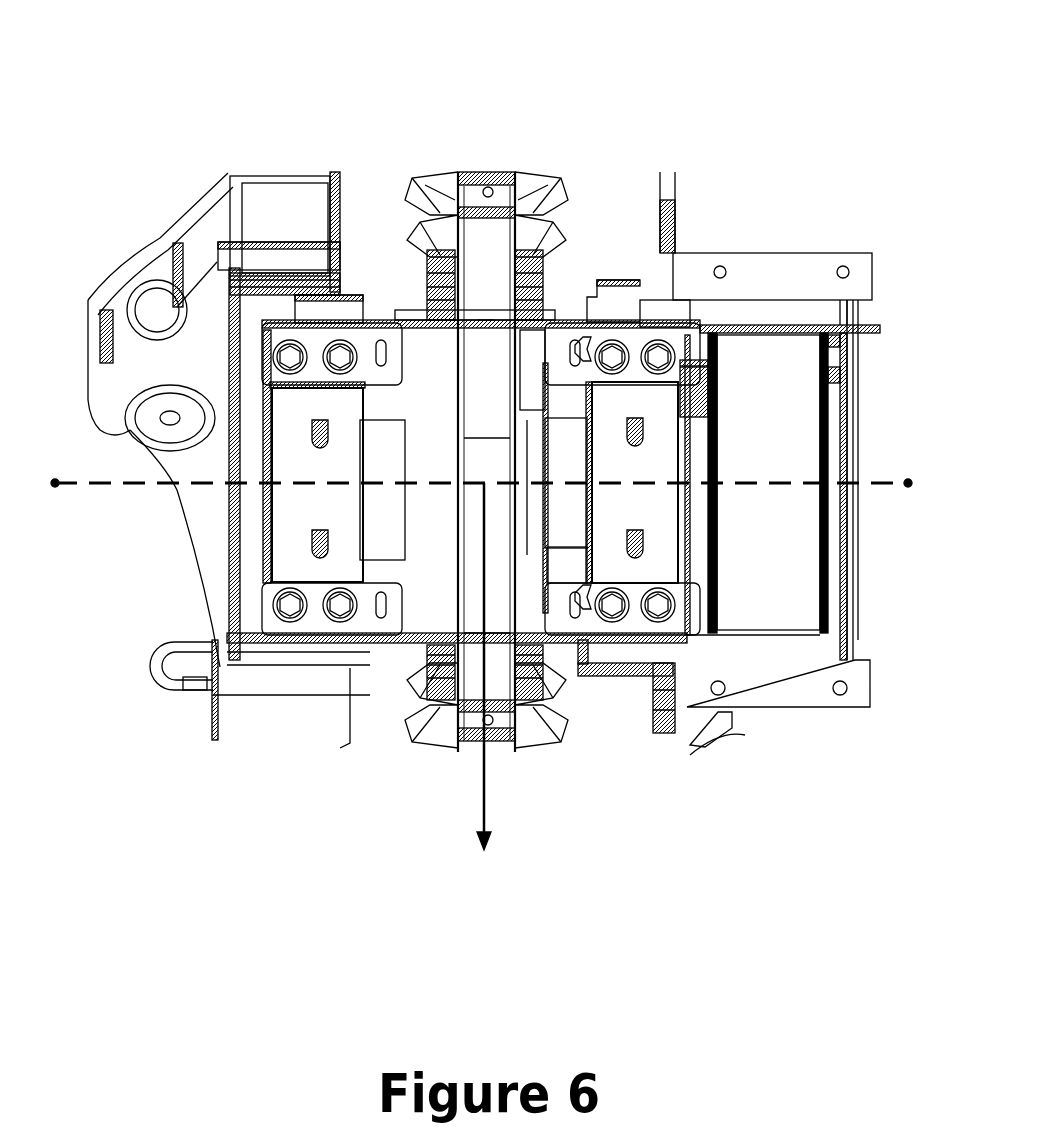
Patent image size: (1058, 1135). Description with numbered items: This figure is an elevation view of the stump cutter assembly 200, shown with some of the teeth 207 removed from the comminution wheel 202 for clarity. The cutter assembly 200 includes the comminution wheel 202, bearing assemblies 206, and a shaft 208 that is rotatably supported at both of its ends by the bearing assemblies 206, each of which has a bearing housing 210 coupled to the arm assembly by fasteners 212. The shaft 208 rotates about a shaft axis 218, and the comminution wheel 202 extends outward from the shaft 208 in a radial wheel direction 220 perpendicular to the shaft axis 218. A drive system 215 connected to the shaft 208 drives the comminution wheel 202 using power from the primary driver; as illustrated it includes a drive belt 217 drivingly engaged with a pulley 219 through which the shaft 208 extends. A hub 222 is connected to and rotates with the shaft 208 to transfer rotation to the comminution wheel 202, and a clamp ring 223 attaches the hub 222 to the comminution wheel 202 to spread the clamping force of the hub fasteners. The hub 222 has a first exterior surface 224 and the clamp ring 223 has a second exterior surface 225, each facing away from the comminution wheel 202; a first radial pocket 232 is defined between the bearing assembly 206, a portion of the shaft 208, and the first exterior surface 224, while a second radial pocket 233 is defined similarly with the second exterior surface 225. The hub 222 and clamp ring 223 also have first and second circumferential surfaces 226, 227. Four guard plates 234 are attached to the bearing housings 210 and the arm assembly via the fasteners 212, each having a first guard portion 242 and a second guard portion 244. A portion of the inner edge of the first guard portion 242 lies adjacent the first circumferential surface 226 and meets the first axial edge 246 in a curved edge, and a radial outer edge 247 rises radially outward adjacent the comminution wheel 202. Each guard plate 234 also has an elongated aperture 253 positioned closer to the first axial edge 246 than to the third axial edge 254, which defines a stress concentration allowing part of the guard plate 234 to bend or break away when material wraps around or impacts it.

The cutter assembly 200 is at (769, 96).
The comminution wheel 202 is at (470, 331).
The bearing assemblies 206 is at (268, 518).
The teeth 207 is at (480, 253).
The shaft 208 is at (563, 520).
The bearing housing 210 is at (382, 408).
The fasteners 212 is at (872, 256).
The drive system 215 is at (869, 427).
The drive belt 217 is at (780, 603).
The shaft axis 218 is at (85, 485).
The pulley 219 is at (852, 580).
The radial wheel direction 220 is at (486, 810).
The hub 222 is at (290, 452).
The clamp ring 223 is at (532, 384).
The first exterior surface 224 is at (432, 622).
The second exterior surface 225 is at (527, 557).
The first circumferential surface 226 is at (400, 357).
The second circumferential surface 227 is at (576, 582).
The first radial pocket 232 is at (427, 377).
The second radial pocket 233 is at (635, 641).
The guard plates 234 is at (313, 326).
The first guard portion 242 is at (403, 652).
The second guard portion 244 is at (268, 562).
The first axial edge 246 is at (482, 320).
The radial outer edge 247 is at (396, 308).
The aperture 253 is at (586, 342).
The third axial edge 254 is at (653, 410).